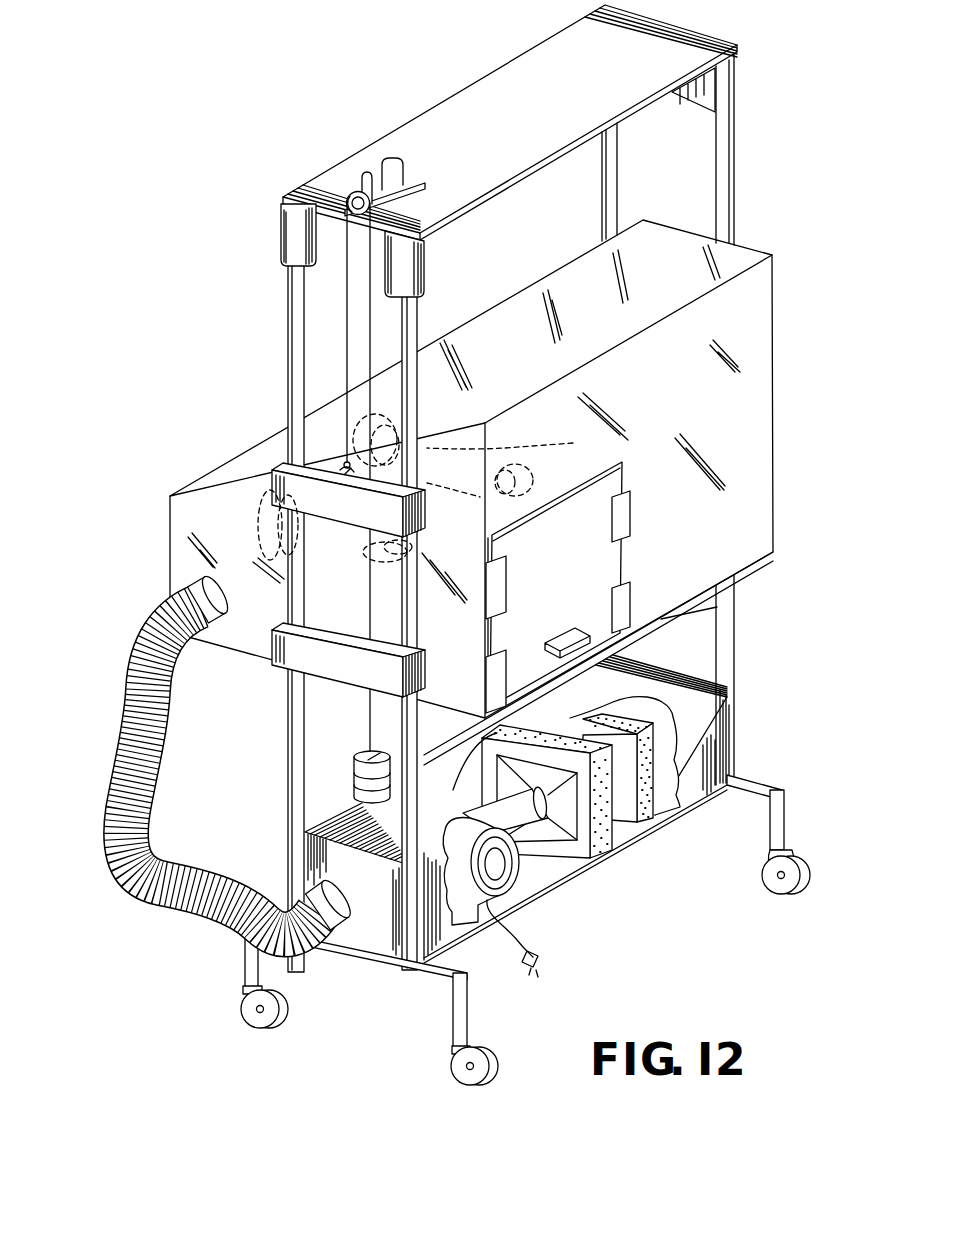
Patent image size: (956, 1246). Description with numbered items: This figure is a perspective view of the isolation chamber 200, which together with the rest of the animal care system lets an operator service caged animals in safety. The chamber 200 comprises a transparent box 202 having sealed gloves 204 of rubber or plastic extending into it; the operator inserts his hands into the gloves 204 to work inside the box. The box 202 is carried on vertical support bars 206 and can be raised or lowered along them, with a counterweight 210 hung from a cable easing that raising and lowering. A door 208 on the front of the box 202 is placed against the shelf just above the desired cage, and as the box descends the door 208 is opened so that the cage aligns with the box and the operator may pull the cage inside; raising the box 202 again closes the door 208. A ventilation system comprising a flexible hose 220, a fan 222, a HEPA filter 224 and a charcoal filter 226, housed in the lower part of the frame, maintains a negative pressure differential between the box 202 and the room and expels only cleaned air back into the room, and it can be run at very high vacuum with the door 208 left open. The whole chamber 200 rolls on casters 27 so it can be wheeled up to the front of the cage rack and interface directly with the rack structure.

The isolation chamber 200 is at (168, 527).
The transparent box 202 is at (775, 418).
The sealed gloves 204 is at (267, 522).
The support bars 206 is at (291, 313).
The door 208 is at (578, 556).
The counterweight 210 is at (358, 765).
The hose 220 is at (110, 815).
The fan 222 is at (520, 860).
The HEPA filter 224 is at (622, 845).
The charcoal filter 226 is at (657, 822).
The casters 27 is at (805, 860).